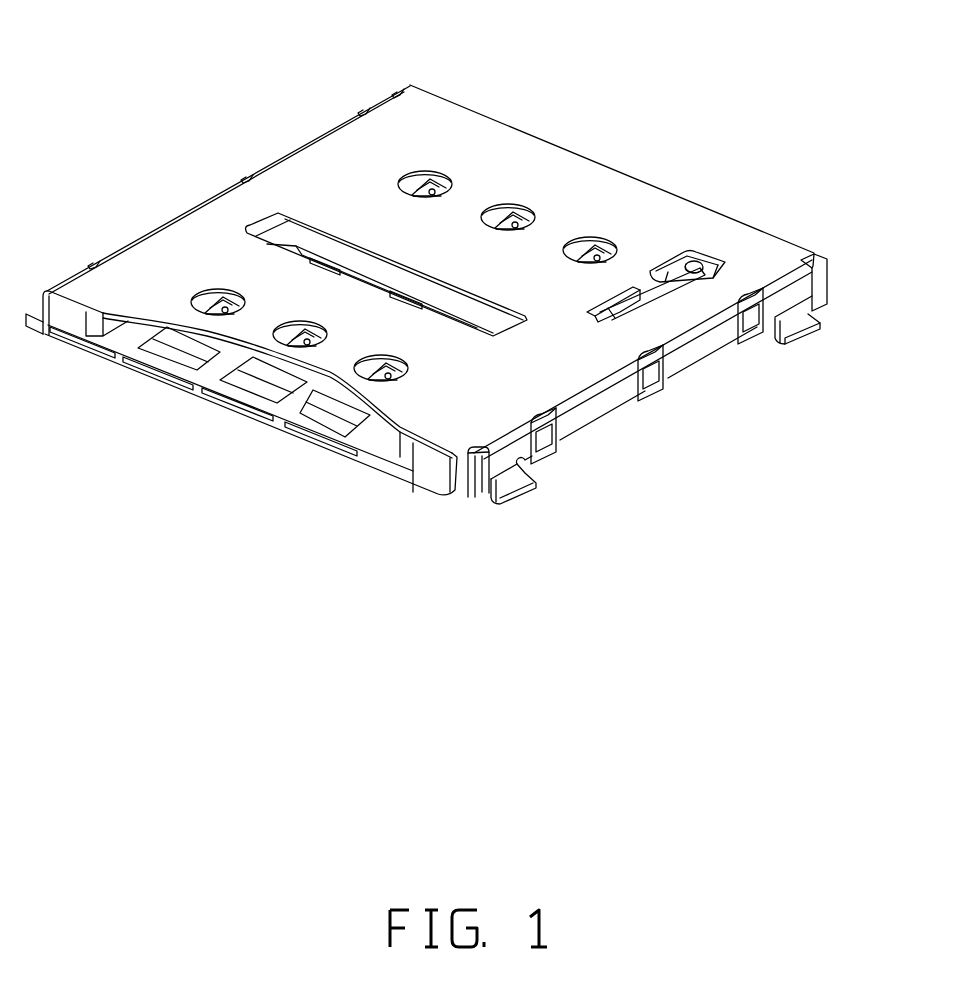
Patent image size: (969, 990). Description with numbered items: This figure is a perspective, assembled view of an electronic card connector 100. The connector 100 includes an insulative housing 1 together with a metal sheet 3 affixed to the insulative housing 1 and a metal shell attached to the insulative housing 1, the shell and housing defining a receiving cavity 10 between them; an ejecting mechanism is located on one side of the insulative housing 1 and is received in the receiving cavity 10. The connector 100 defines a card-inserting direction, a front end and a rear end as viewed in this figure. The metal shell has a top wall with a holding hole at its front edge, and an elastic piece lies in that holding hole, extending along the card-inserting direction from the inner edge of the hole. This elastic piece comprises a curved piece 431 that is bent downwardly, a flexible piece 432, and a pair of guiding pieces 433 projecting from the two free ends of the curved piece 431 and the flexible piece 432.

The electronic card connector 100 is at (205, 168).
The metal sheet 3 is at (397, 141).
The insulative housing 1 is at (222, 368).
The receiving cavity 10 is at (267, 418).
The curved piece 431 is at (625, 308).
The flexible piece 432 is at (677, 270).
The guiding pieces 433 is at (690, 263).